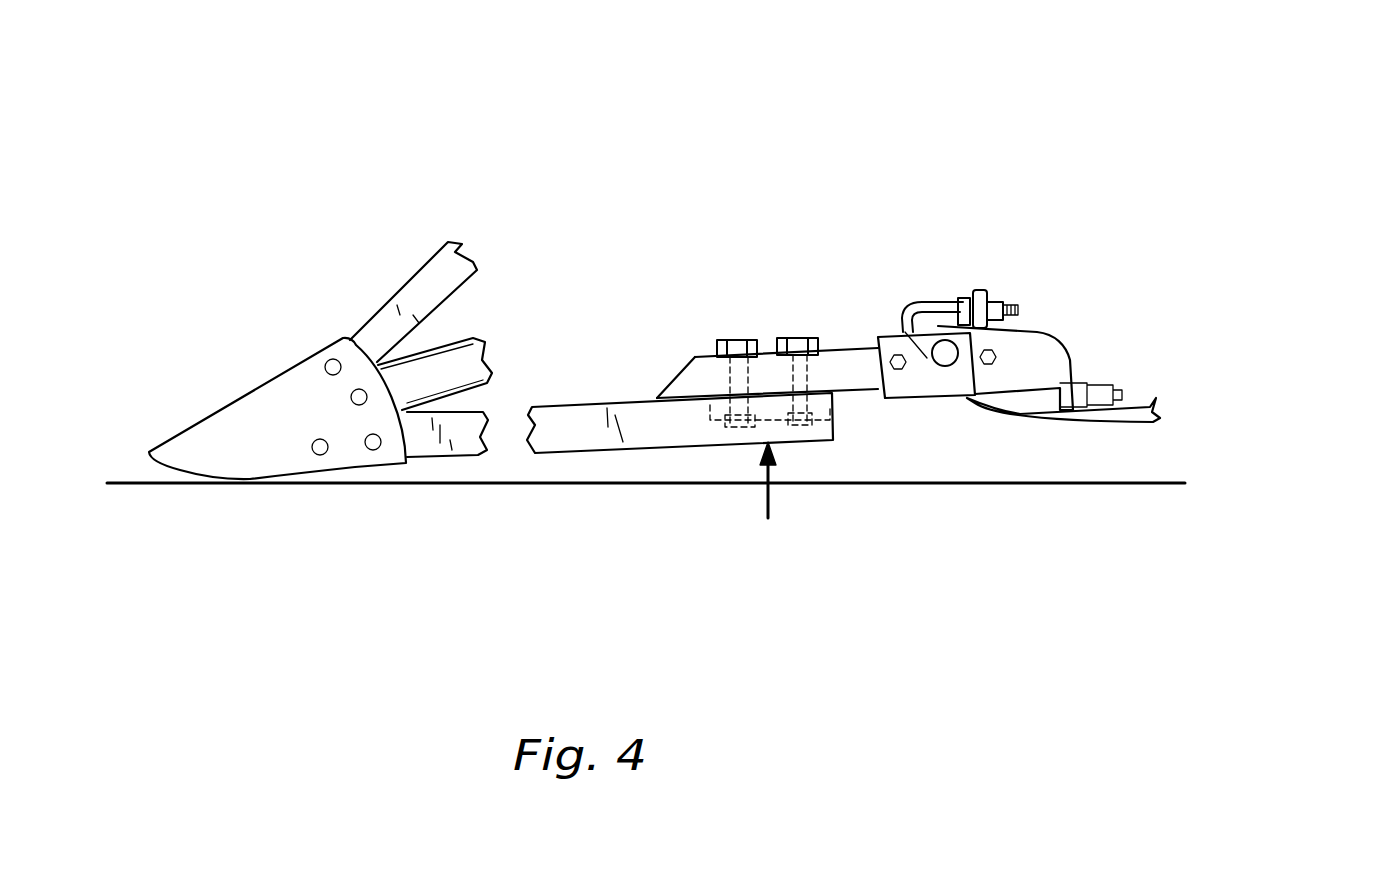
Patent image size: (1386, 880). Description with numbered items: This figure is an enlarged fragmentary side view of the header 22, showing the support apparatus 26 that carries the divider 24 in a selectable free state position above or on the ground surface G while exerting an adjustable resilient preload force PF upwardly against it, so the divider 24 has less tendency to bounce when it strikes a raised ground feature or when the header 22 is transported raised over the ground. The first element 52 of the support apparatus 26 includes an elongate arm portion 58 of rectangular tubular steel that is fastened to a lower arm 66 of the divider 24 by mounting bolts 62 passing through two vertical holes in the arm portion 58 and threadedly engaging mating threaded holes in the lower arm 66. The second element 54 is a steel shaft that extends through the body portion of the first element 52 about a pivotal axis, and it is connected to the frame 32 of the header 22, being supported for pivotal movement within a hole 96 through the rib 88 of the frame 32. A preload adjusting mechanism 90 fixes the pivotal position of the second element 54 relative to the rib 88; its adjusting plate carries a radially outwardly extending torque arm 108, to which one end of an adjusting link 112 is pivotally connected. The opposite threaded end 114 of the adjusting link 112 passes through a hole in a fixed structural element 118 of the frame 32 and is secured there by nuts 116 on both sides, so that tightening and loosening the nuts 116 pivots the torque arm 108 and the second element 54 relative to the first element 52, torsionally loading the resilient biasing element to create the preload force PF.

The header 22 is at (1172, 150).
The divider 24 is at (545, 460).
The support apparatus 26 is at (943, 243).
The frame 32 is at (1151, 367).
The first element 52 is at (850, 346).
The second element 54 is at (940, 366).
The arm portion 58 is at (697, 355).
The mounting bolts 62 is at (791, 338).
The lower arm 66 is at (645, 452).
The rib 88 is at (923, 338).
The preload adjusting mechanism 90 is at (943, 243).
The hole 96 is at (960, 370).
The torque arm 108 is at (908, 292).
The adjusting link 112 is at (943, 303).
The threaded end 114 is at (1013, 307).
The nuts 116 is at (968, 298).
The fixed structural element 118 is at (1037, 332).
The ground surface G is at (130, 482).
The preload force PF is at (768, 518).